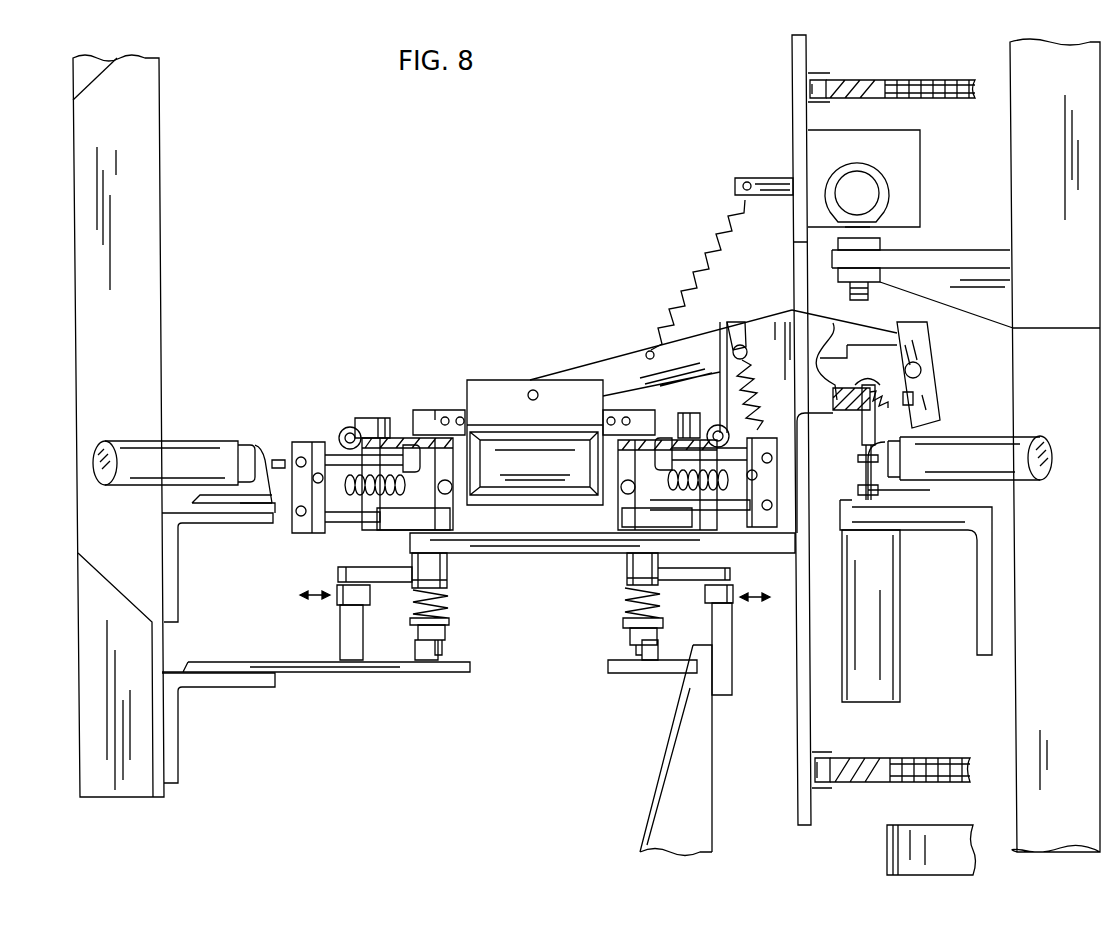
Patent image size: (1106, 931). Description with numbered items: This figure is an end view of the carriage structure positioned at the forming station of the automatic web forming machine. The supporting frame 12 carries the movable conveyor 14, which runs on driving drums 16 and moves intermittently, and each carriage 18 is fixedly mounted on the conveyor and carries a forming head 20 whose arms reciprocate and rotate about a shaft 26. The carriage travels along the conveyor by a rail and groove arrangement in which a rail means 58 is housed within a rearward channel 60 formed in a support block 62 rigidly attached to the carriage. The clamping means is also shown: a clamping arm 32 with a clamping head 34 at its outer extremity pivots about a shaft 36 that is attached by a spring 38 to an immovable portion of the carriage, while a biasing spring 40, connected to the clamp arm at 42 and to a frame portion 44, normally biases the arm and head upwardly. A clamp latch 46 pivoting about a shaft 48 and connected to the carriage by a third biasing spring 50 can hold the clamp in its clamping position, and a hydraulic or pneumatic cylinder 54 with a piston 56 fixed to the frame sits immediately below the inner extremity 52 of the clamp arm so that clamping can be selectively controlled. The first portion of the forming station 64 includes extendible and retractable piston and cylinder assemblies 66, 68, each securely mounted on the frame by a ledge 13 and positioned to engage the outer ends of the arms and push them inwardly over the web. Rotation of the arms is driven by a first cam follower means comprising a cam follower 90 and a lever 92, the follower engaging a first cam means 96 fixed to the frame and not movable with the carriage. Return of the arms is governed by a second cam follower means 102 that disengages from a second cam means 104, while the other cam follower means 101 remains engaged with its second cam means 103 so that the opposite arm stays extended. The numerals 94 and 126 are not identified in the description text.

The supporting frame 12 is at (153, 156).
The ledge 13 is at (232, 515).
The movable conveyor 14 is at (826, 80).
The driving drums 16 is at (900, 82).
The carriage 18 is at (785, 232).
The forming head 20 is at (400, 415).
The shaft 26 is at (332, 455).
The clamping arm 32 is at (597, 373).
The clamping head 34 is at (500, 380).
The shaft 36 is at (750, 345).
The spring 38 is at (760, 381).
The biasing spring 40 is at (713, 228).
The spring connection point 42 is at (655, 355).
The frame portion 44 is at (762, 180).
The clamp latch 46 is at (926, 337).
The shaft 48 is at (921, 370).
The third biasing spring 50 is at (913, 398).
The inner extremity of clamp arm 52 is at (860, 324).
The cylinder 54 is at (887, 598).
The piston 56 is at (862, 460).
The rail means 58 is at (855, 187).
The rearward channel 60 is at (872, 172).
The support block 62 is at (858, 142).
The first portion of the forming station 64 is at (445, 357).
The piston and cylinder assembly 66 is at (200, 452).
The piston and cylinder assembly 68 is at (983, 447).
The cam follower 90 is at (362, 595).
The lever 92 is at (400, 567).
The guide block 94 is at (448, 572).
The first cam means 96 is at (340, 632).
The cam follower means 101 is at (455, 605).
The second cam follower means 102 is at (621, 603).
The second cam means 103 is at (415, 652).
The second cam means 104 is at (655, 650).
The window 126 is at (550, 483).